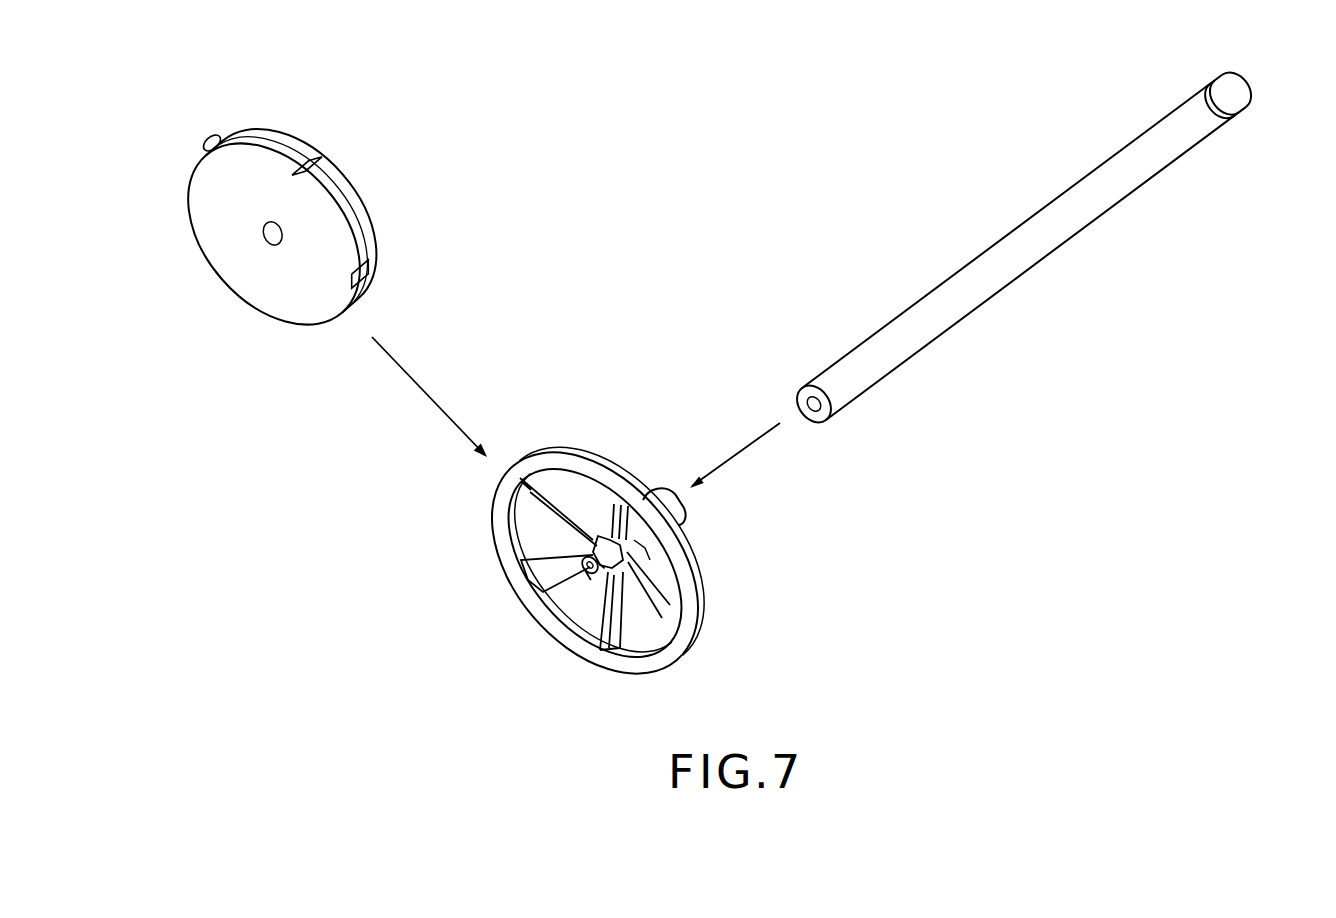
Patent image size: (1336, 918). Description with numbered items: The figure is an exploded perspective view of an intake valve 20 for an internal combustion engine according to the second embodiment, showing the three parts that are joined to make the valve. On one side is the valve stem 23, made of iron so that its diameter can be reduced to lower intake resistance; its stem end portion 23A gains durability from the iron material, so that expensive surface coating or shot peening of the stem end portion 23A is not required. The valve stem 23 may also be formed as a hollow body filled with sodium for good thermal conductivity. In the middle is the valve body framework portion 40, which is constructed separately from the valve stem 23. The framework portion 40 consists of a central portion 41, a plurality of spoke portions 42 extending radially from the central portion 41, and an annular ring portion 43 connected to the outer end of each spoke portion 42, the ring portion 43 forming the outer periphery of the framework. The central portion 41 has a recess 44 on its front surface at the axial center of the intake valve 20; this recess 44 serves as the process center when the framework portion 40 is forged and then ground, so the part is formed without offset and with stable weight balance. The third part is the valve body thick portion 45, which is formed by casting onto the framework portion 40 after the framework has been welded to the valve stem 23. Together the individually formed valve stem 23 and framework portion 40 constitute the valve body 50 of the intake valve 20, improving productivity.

The intake valve 20 is at (734, 148).
The valve stem 23 is at (955, 273).
The stem end portion 23A is at (1243, 85).
The valve body framework portion 40 is at (540, 448).
The central portion 41 is at (684, 514).
The spoke portions 42 is at (608, 605).
The annular ring portion 43 is at (683, 650).
The recess 44 is at (590, 566).
The valve body thick portion 45 is at (372, 247).
The valve body 50 is at (477, 241).